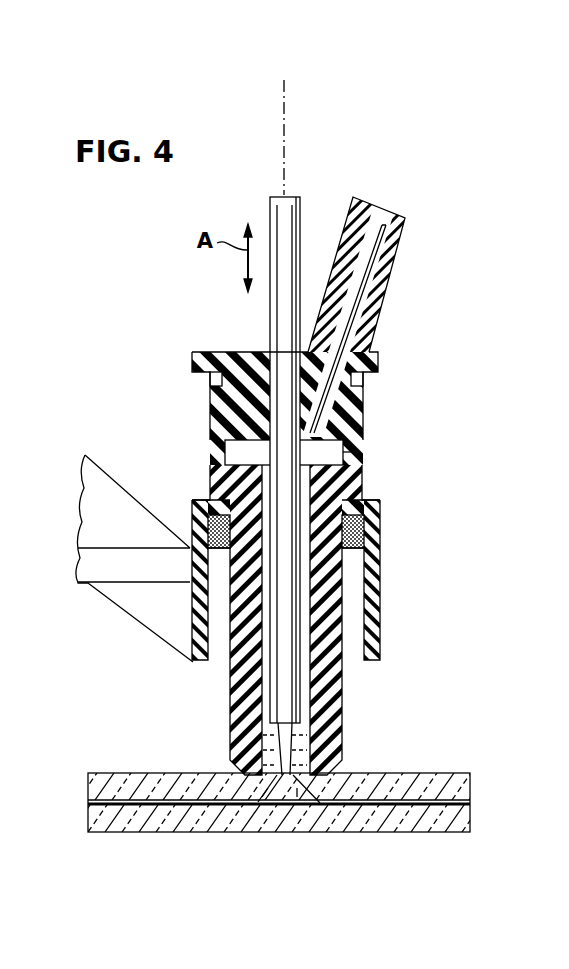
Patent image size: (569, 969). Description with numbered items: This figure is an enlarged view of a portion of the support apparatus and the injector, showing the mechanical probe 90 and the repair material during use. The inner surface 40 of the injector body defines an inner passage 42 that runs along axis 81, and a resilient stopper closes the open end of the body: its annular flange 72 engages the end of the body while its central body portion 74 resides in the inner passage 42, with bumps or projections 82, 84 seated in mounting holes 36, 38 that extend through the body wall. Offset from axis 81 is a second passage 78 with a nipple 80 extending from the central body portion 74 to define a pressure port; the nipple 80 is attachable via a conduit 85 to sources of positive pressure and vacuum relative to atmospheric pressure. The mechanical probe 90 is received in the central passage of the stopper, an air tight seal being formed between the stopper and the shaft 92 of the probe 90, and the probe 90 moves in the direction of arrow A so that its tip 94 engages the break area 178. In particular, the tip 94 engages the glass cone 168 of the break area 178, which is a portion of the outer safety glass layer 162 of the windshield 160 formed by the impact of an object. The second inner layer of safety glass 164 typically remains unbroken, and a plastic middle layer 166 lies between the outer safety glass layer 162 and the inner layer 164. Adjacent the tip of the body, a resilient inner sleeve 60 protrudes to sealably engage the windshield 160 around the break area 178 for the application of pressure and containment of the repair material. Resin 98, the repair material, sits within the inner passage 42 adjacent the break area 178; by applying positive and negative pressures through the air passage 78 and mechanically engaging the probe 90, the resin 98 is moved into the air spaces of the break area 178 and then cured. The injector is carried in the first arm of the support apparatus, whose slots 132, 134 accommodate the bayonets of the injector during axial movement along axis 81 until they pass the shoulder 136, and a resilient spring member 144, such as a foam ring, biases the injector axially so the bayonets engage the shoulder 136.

The axis 81 is at (284, 118).
The mechanical probe 90 is at (272, 196).
The shaft 92 is at (295, 567).
The conduit 85 is at (348, 227).
The nipple 80 is at (372, 252).
The second passage 78 is at (393, 292).
The annular flange 72 is at (200, 352).
The projection 82 is at (210, 388).
The projection 84 is at (368, 395).
The mounting hole 36 is at (232, 428).
The mounting hole 38 is at (365, 412).
The central body portion 74 is at (226, 445).
The inner passage 42 is at (352, 462).
The inner surface 40 is at (308, 490).
The resilient spring member 144 is at (380, 530).
The slot 134 is at (366, 606).
The shoulder 136 is at (200, 662).
The slot 132 is at (207, 663).
The resin 98 is at (343, 688).
The tip 94 is at (310, 742).
The windshield 160 is at (246, 824).
The outer safety glass layer 162 is at (433, 773).
The plastic middle layer 166 is at (470, 803).
The second inner layer of safety glass 164 is at (450, 833).
The resilient inner sleeve 60 is at (223, 777).
The break area 178 is at (262, 797).
The glass cone 168 is at (297, 797).